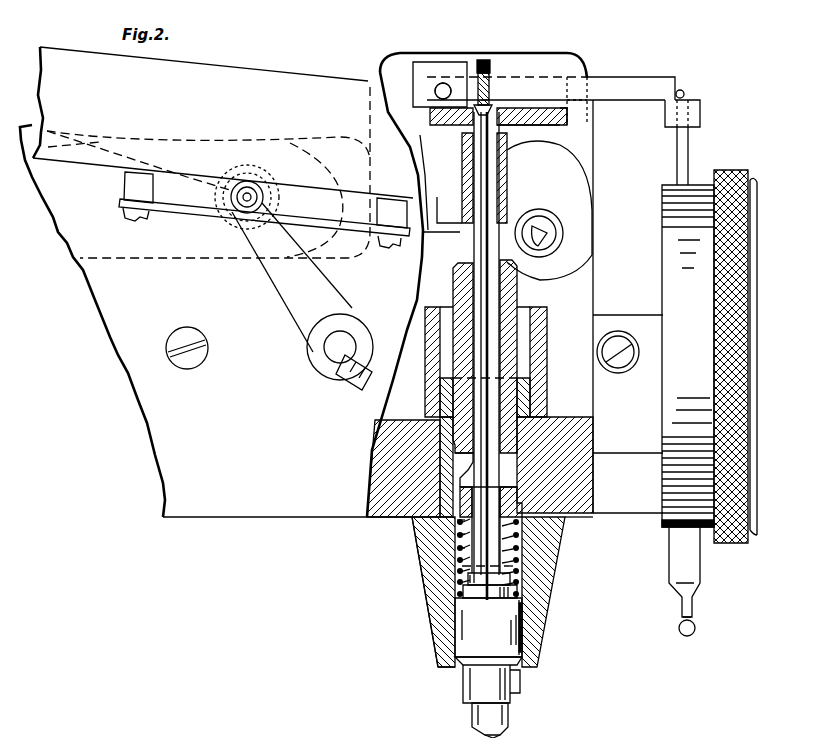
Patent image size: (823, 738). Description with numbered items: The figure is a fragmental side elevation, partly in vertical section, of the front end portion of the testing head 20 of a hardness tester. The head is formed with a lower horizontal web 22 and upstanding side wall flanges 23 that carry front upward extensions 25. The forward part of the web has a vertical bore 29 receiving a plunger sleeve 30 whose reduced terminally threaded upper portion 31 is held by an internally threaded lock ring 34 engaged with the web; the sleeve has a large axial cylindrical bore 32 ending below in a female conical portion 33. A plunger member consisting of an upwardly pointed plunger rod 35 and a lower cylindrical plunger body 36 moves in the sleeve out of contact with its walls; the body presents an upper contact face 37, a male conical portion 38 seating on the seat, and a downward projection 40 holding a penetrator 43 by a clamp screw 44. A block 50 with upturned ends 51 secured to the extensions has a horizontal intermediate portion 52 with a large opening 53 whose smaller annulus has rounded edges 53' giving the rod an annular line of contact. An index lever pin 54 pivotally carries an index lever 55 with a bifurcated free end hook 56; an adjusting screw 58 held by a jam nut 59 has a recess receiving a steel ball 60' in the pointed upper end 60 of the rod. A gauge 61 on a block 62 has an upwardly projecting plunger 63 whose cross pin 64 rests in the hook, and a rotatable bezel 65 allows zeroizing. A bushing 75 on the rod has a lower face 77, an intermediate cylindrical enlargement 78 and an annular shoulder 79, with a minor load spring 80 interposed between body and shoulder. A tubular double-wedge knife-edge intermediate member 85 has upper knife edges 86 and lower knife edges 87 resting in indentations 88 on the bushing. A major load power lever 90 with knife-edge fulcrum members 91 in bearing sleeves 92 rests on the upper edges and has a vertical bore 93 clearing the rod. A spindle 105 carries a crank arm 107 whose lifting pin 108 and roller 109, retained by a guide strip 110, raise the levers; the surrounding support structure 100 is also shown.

The testing head 20 is at (277, 520).
The lower horizontal web 22 is at (372, 520).
The side wall flanges 23 is at (128, 372).
The front upward extensions 25 is at (573, 56).
The vertical bore 29 is at (540, 489).
The plunger sleeve 30 is at (567, 530).
The reduced terminally threaded upper portion 31 is at (528, 385).
The large axial cylindrical bore 32 is at (522, 400).
The female conical portion 33 is at (452, 666).
The lock ring 34 is at (547, 348).
The plunger rod 35 is at (465, 296).
The plunger body 36 is at (512, 622).
The upper contact face 37 is at (413, 595).
The male conical portion 38 is at (478, 660).
The downward projection 40 is at (476, 698).
The penetrator 43 is at (508, 712).
The clamp screw 44 is at (522, 680).
The block 50 is at (575, 115).
The upturned ends 51 is at (580, 108).
The horizontal intermediate portion 52 is at (568, 120).
The opening 53 is at (546, 100).
The rounded edges 53' is at (532, 130).
The index lever pin 54 is at (445, 83).
The index lever 55 is at (645, 78).
The bifurcated free end hook 56 is at (702, 108).
The adjusting screw 58 is at (483, 58).
The jam nut 59 is at (495, 72).
The pointed upper end 60 is at (498, 91).
The steel ball 60' is at (456, 91).
The gauge 61 is at (662, 244).
The block 62 is at (628, 414).
The gauge plunger 63 is at (689, 163).
The cross pin 64 is at (684, 92).
The bezel 65 is at (735, 172).
The bushing 75 is at (466, 562).
The lower face 77 is at (514, 572).
The intermediate cylindrical enlargement 78 is at (457, 522).
The annular shoulder 79 is at (458, 536).
The minor load spring 80 is at (460, 550).
The tubular double-wedge knife-edge intermediate member 85 is at (520, 291).
The upper knife edges 86 is at (476, 248).
The lower knife edges 87 is at (498, 490).
The indentations 88 is at (478, 488).
The major load power lever 90 is at (560, 170).
The knife-edge fulcrum members 91 is at (540, 228).
The bearing sleeves 92 is at (556, 236).
The vertical bore 93 is at (508, 160).
The plate 100 is at (256, 80).
The spindle 105 is at (333, 355).
The crank arm 107 is at (278, 300).
The lifting pin 108 is at (244, 202).
The roller 109 is at (232, 195).
The guide strip 110 is at (183, 206).